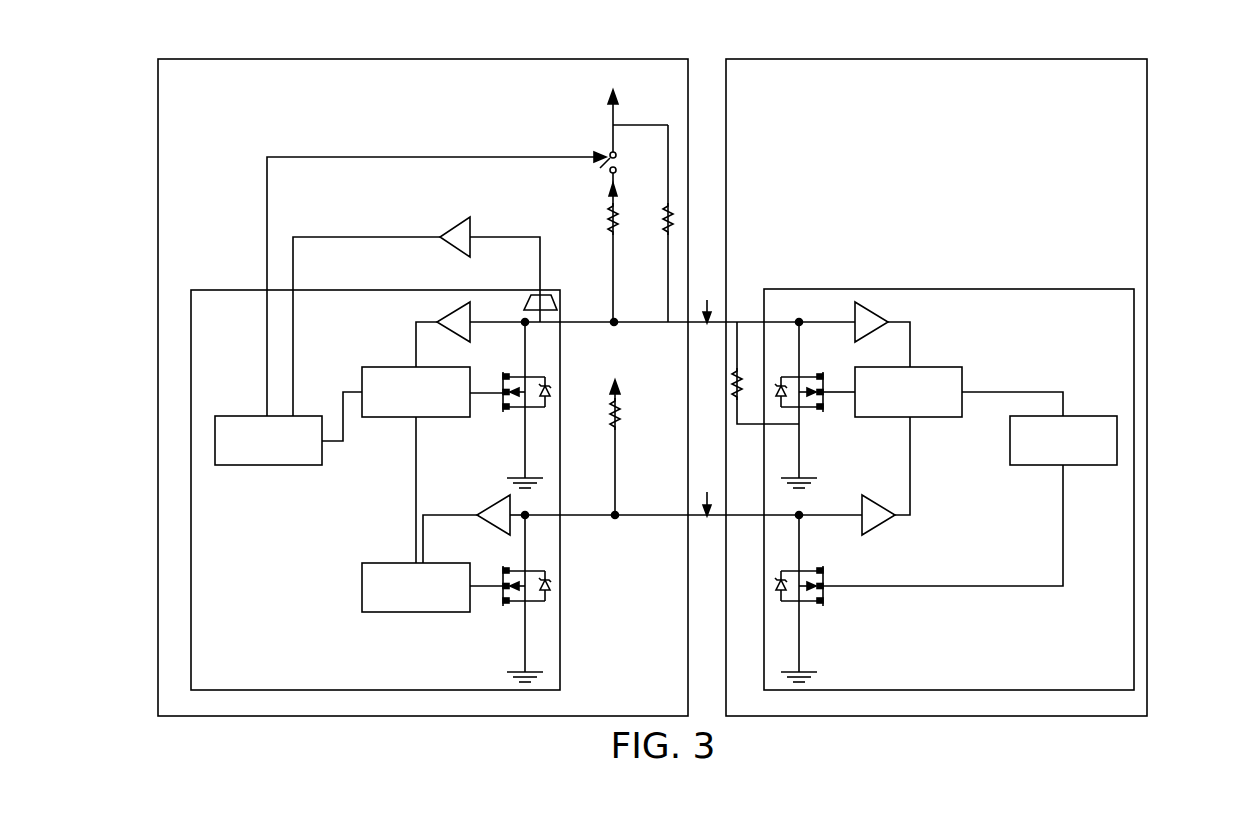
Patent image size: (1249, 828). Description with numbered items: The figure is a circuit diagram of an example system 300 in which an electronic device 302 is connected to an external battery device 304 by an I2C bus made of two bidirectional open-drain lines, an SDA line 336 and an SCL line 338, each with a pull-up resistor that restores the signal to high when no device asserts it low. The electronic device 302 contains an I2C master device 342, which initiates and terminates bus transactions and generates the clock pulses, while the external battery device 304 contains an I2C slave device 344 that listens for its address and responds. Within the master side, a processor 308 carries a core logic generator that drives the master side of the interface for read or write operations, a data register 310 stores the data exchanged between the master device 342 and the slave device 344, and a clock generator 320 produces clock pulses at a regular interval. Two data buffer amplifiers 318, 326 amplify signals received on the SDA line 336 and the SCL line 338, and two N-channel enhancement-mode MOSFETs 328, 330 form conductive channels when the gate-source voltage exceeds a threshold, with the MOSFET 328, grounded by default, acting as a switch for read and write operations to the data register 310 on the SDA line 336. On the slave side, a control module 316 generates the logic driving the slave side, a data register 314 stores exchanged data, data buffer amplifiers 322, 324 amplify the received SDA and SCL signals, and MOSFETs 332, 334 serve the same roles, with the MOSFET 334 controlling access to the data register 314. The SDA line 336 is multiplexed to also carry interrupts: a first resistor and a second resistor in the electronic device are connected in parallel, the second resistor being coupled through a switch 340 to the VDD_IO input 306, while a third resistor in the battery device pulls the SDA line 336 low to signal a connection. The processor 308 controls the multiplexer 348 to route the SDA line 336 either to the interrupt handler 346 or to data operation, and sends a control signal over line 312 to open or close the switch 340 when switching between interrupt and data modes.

The system 300 is at (1183, 66).
The electronic device 302 is at (158, 182).
The external battery device 304 is at (1147, 193).
The VDD_IO input 306 is at (613, 70).
The processor 308 is at (246, 416).
The data register 310 is at (428, 367).
The control signal line 312 is at (268, 210).
The data register 314 is at (963, 378).
The control module 316 is at (1073, 416).
The data buffer amplifier 318 is at (450, 312).
The clock generator 320 is at (413, 612).
The data buffer amplifier 322 is at (878, 312).
The data buffer amplifier 324 is at (880, 525).
The data buffer amplifier 326 is at (495, 497).
The N-channel enhancement-mode MOSFET 328 is at (512, 408).
The N-channel enhancement-mode MOSFET 330 is at (540, 602).
The N-channel enhancement-mode MOSFET 332 is at (808, 602).
The N-channel enhancement-mode MOSFET 334 is at (808, 410).
The SDA line 336 is at (690, 302).
The SCL line 338 is at (693, 495).
The switch 340 is at (624, 165).
The I2C master device 342 is at (385, 290).
The I2C slave device 344 is at (996, 289).
The interrupt handler 346 is at (465, 228).
The multiplexer 348 is at (551, 295).